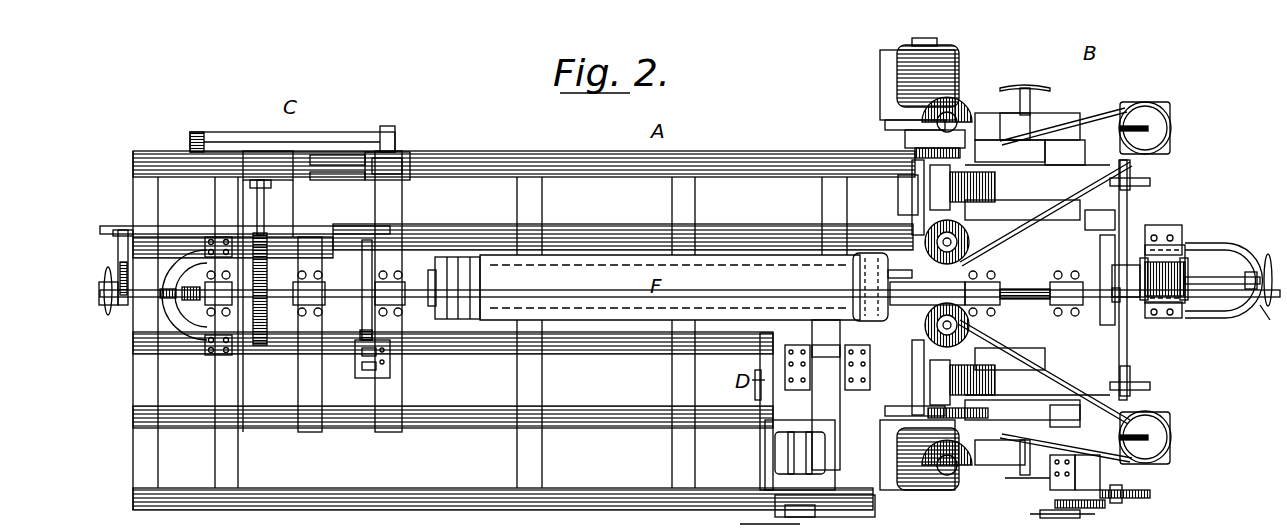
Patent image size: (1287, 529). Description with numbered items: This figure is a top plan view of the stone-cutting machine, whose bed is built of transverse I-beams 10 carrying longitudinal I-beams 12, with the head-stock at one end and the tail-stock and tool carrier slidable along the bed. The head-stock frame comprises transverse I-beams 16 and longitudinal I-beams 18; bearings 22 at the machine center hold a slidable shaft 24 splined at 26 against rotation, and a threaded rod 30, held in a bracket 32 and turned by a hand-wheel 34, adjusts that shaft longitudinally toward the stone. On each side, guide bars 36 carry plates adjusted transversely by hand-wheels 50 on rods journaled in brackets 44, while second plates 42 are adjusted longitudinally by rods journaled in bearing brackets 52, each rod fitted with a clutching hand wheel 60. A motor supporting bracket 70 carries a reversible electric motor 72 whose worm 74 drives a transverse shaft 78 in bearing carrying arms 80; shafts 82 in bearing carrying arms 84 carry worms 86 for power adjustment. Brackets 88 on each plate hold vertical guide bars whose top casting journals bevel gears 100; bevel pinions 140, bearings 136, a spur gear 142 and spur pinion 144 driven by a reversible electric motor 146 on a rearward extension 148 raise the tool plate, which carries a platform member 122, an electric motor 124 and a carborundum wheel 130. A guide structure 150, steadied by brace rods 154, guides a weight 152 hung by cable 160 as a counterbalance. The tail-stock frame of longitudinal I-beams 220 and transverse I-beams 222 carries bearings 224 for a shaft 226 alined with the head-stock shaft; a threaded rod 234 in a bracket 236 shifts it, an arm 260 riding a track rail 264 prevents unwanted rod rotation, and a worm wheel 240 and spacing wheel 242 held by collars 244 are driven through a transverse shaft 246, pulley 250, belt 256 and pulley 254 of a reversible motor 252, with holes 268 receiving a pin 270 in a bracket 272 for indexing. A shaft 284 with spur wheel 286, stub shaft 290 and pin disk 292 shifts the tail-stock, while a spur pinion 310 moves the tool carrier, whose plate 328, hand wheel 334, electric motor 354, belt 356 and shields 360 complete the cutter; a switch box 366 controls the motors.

The I-beams 10 is at (676, 460).
The I-beams 12 is at (586, 177).
The I-beams 16 is at (350, 520).
The I-beams 18 is at (1150, 232).
The bearings 22 is at (1060, 278).
The shaft 24 is at (926, 283).
The spline 26 is at (1032, 298).
The rod 30 is at (1250, 272).
The bracket 32 is at (1218, 318).
The hand-wheel 34 is at (1262, 323).
The guide bars 36 is at (990, 122).
The second plate 42 is at (1022, 307).
The bracket 44 is at (1030, 124).
The hand-wheel 50 is at (1027, 90).
The bearing bracket 52 is at (1095, 172).
The hand wheel 60 is at (1135, 178).
The motor supporting bracket 70 is at (1168, 252).
The reversible electric motor 72 is at (1164, 279).
The worm 74 is at (1112, 304).
The transverse shaft 78 is at (1115, 243).
The bearing carrying arms 80 is at (1112, 275).
The shafts 82 is at (1127, 214).
The bearing carrying arms 84 is at (1102, 217).
The worms 86 is at (1138, 186).
The brackets 88 is at (1040, 354).
The bevel gear 100 is at (955, 108).
The platform member 122 is at (885, 100).
The electric motor 124 is at (925, 52).
The carborundum wheel 130 is at (910, 244).
The bearings 136 is at (970, 285).
The bevel pinions 140 is at (912, 222).
The spur gear 142 is at (910, 152).
The spur pinion 144 is at (972, 419).
The reversible electric motor 146 is at (992, 186).
The rearward extension 148 is at (1062, 166).
The guide structure 150 is at (1165, 104).
The weight 152 is at (1168, 128).
The brace rods 154 is at (1110, 108).
The cable 160 is at (1067, 417).
The I-beams 220 is at (275, 354).
The I-beams 222 is at (400, 214).
The bearings 224 is at (218, 293).
The shaft 226 is at (422, 300).
The threaded rod 234 is at (186, 296).
The bracket 236 is at (172, 318).
The worm wheel 240 is at (265, 258).
The spacing wheel 242 is at (326, 287).
The collars 244 is at (344, 298).
The transverse shaft 246 is at (262, 198).
The pulley 250 is at (218, 135).
The reversible motor 252 is at (412, 160).
The pulley 254 is at (392, 133).
The belt 256 is at (337, 140).
The arm 260 is at (120, 252).
The track rail 264 is at (172, 228).
The holes 268 is at (362, 250).
The pin 270 is at (362, 362).
The bracket 272 is at (390, 366).
The shaft 284 is at (1122, 490).
The spur wheel 286 is at (1116, 514).
The stub shaft 290 is at (1062, 470).
The disk 292 is at (1060, 512).
The spur pinion 310 is at (807, 512).
The plate 328 is at (821, 460).
The hand wheel 334 is at (756, 430).
The electric motor 354 is at (765, 470).
The belt 356 is at (838, 438).
The shields 360 is at (760, 346).
The switch box 366 is at (1100, 470).